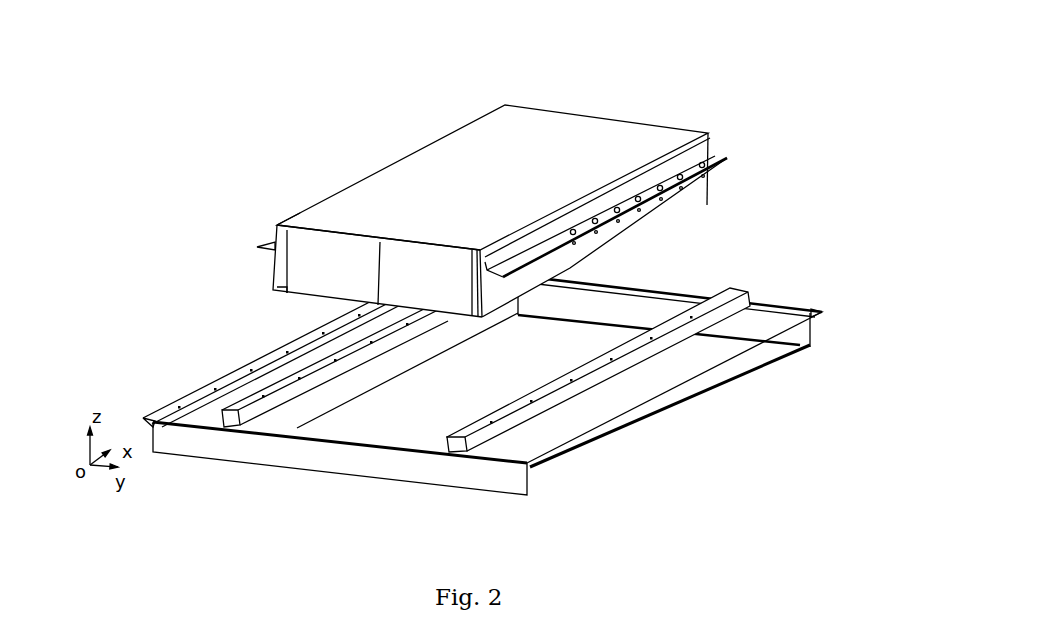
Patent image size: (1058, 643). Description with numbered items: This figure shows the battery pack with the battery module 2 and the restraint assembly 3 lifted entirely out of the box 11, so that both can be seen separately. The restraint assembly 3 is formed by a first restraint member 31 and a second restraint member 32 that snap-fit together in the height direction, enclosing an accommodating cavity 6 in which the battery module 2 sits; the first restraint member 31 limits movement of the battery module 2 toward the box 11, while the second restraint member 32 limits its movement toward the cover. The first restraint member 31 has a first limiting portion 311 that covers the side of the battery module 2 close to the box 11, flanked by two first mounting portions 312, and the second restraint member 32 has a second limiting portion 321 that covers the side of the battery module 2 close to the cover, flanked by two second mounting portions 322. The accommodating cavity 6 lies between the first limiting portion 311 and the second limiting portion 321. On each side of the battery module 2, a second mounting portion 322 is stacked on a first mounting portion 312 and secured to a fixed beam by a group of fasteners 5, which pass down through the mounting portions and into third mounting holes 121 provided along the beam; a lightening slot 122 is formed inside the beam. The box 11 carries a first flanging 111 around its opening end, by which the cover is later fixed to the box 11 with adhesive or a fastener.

The battery module 2 is at (487, 223).
The restraint assembly 3 is at (326, 251).
The first restraint member 31 is at (342, 271).
The second restraint member 32 is at (278, 225).
The first limiting portion 311 is at (582, 127).
The first mounting portion 312 is at (717, 155).
The second limiting portion 321 is at (682, 200).
The second mounting portion 322 is at (727, 158).
The fastener 5 is at (713, 168).
The accommodating cavity 6 is at (480, 320).
The box 11 is at (508, 403).
The first flanging 111 is at (785, 335).
The third mounting hole 121 is at (693, 313).
The lightening slot 122 is at (460, 447).